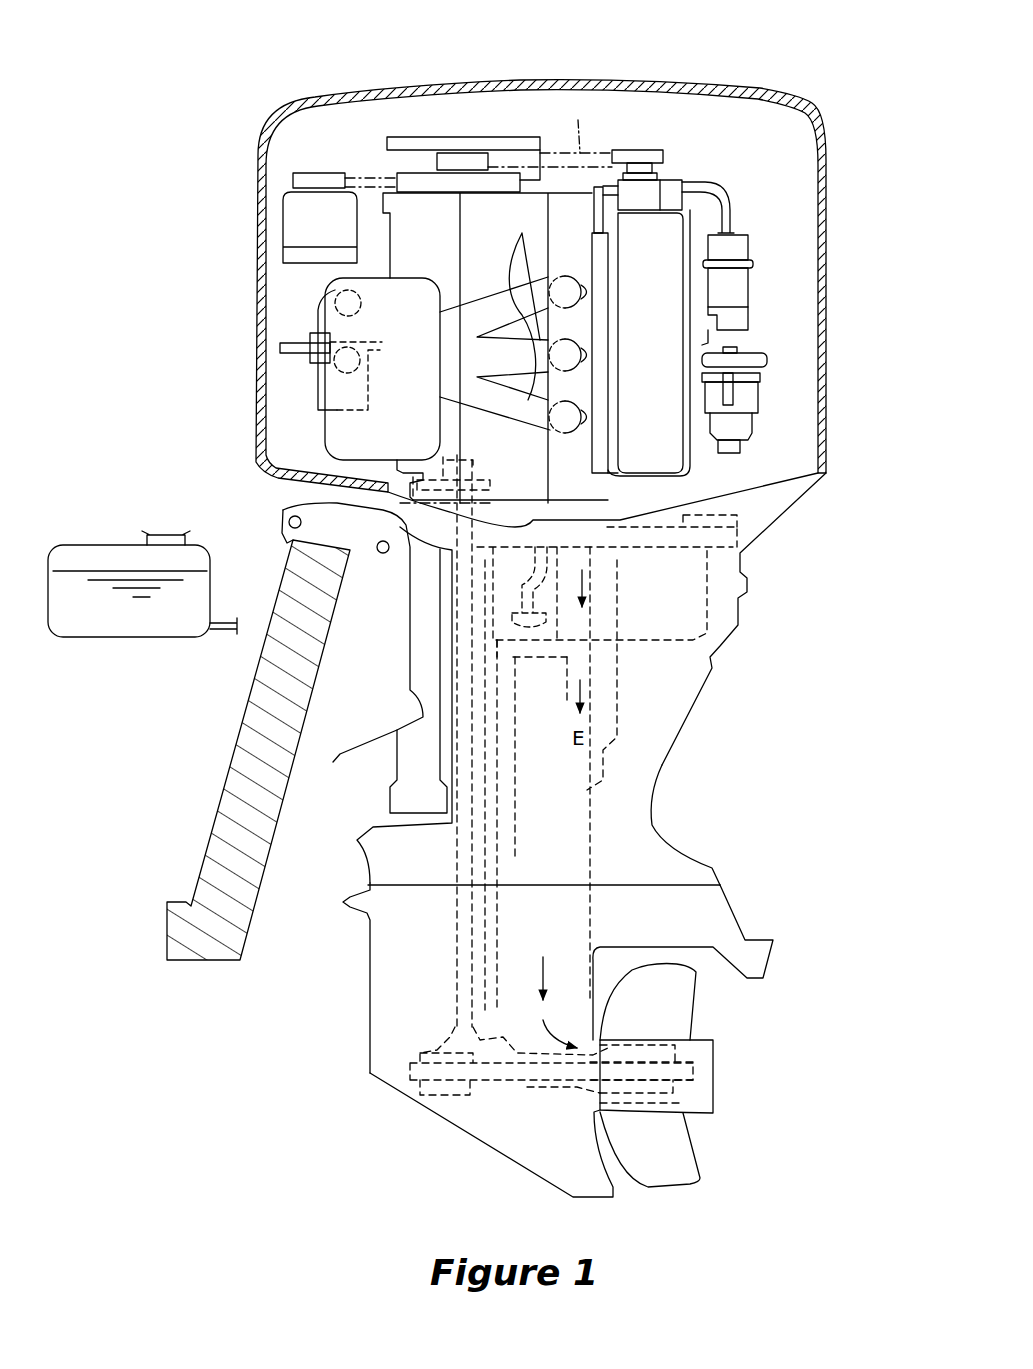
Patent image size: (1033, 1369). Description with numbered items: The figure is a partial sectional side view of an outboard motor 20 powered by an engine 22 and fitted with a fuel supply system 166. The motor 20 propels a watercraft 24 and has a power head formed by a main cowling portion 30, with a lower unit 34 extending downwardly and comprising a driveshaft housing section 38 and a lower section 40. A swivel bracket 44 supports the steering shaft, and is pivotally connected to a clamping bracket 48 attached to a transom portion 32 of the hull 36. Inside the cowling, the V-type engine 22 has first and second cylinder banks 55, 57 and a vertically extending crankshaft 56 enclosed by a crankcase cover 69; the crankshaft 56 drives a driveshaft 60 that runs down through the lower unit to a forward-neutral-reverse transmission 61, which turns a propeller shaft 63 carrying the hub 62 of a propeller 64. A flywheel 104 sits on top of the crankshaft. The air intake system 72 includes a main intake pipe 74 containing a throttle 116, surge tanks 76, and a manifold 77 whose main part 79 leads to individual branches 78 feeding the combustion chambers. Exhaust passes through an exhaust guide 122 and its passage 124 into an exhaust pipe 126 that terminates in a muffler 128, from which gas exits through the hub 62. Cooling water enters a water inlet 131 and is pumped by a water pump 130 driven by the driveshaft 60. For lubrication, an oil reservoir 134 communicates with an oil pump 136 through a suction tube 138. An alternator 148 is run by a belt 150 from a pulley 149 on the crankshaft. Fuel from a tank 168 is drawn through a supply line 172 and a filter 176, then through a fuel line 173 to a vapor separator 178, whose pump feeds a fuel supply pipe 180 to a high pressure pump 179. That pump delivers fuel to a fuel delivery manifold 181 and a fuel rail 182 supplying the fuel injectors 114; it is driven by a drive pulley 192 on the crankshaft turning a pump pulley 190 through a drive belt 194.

The outboard motor 20 is at (196, 211).
The engine 22 is at (802, 178).
The watercraft 24 is at (204, 813).
The main cowling portion 30 is at (650, 84).
The transom portion 32 is at (227, 747).
The lower unit 34 is at (792, 768).
The hull 36 is at (250, 937).
The driveshaft housing section 38 is at (663, 763).
The lower section 40 is at (730, 907).
The swivel bracket 44 is at (397, 753).
The clamping bracket 48 is at (315, 768).
The first cylinder bank 55 is at (587, 477).
The crankshaft 56 is at (463, 153).
The second cylinder bank 57 is at (712, 490).
The driveshaft 60 is at (417, 847).
The forward-neutral-reverse transmission 61 is at (463, 1113).
The hub 62 is at (727, 1020).
The propeller shaft 63 is at (497, 1117).
The propeller 64 is at (700, 1157).
The crankcase cover 69 is at (382, 389).
The air intake system 72 is at (281, 423).
The main intake pipe 74 is at (318, 340).
The surge tank 76 is at (323, 437).
The manifold 77 is at (490, 290).
The branch 78 is at (522, 301).
The main part 79 is at (398, 292).
The flywheel 104 is at (490, 150).
The fuel injector 114 is at (592, 226).
The throttle 116 is at (312, 357).
The exhaust guide 122 is at (745, 540).
The passage 124 is at (593, 560).
The exhaust pipe 126 is at (597, 665).
The muffler 128 is at (544, 871).
The water pump 130 is at (433, 863).
The water inlet 131 is at (493, 997).
The oil reservoir 134 is at (687, 640).
The oil pump 136 is at (490, 487).
The suction tube 138 is at (552, 838).
The alternator 148 is at (283, 230).
The pulley 149 is at (515, 180).
The belt 150 is at (353, 177).
The fuel supply system 166 is at (749, 182).
The tank 168 is at (100, 543).
The supply line 172 is at (220, 633).
The fuel line 173 is at (733, 397).
The filter 176 is at (758, 393).
The vapor separator 178 is at (748, 290).
The high pressure pump 179 is at (684, 167).
The fuel supply pipe 180 is at (733, 212).
The fuel delivery manifold 181 is at (607, 220).
The fuel rail 182 is at (608, 335).
The pump pulley 190 is at (647, 150).
The drive pulley 192 is at (427, 177).
The drive belt 194 is at (587, 123).